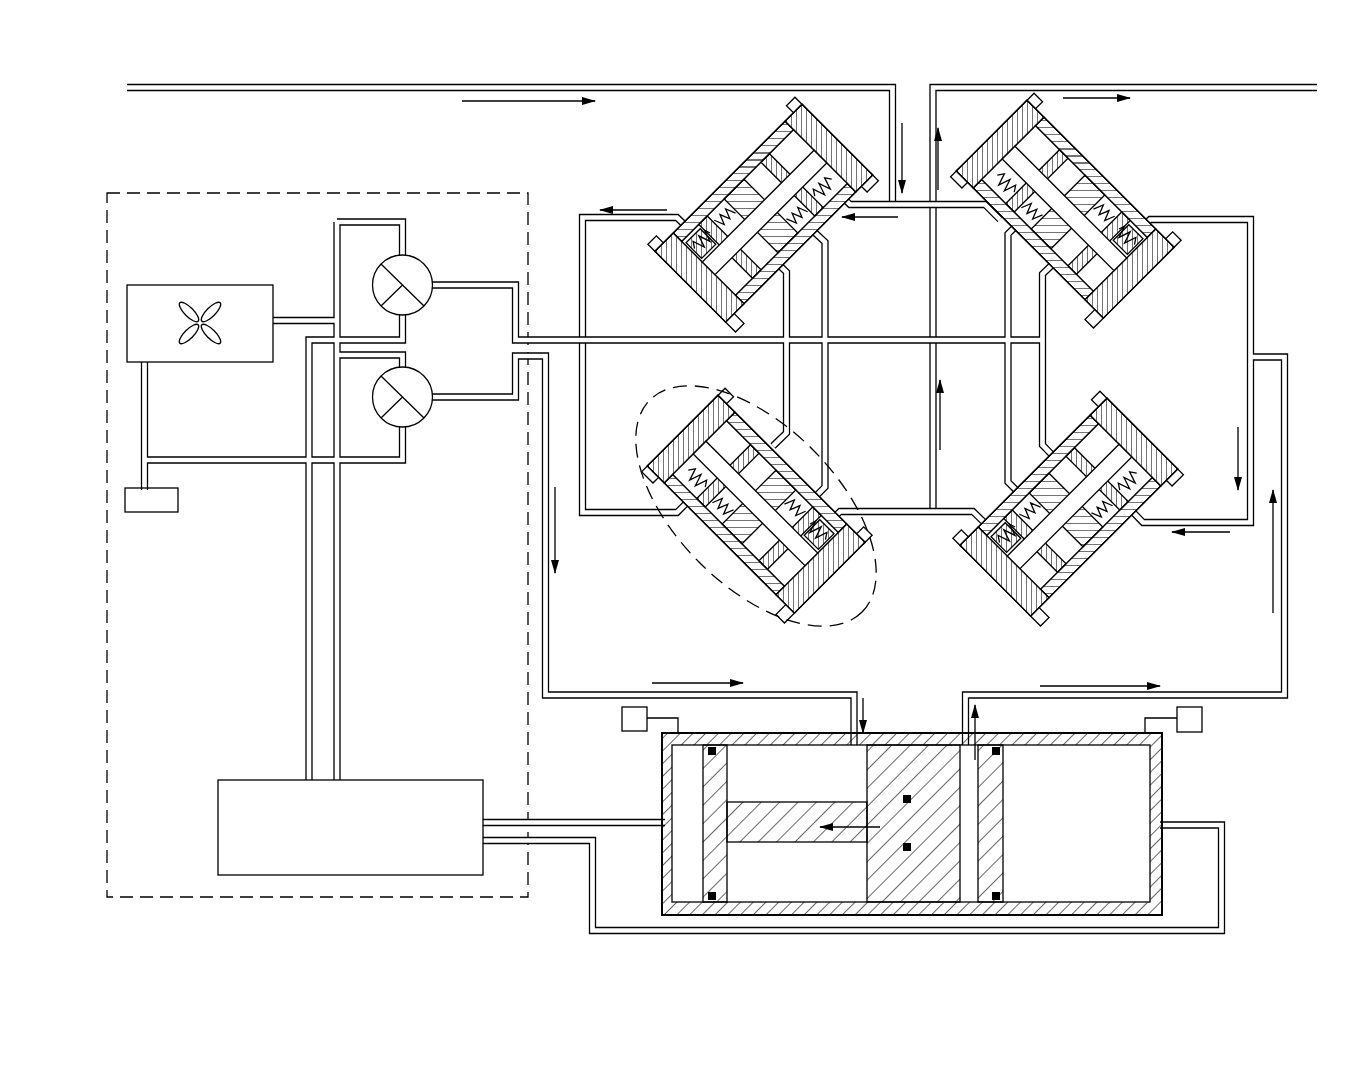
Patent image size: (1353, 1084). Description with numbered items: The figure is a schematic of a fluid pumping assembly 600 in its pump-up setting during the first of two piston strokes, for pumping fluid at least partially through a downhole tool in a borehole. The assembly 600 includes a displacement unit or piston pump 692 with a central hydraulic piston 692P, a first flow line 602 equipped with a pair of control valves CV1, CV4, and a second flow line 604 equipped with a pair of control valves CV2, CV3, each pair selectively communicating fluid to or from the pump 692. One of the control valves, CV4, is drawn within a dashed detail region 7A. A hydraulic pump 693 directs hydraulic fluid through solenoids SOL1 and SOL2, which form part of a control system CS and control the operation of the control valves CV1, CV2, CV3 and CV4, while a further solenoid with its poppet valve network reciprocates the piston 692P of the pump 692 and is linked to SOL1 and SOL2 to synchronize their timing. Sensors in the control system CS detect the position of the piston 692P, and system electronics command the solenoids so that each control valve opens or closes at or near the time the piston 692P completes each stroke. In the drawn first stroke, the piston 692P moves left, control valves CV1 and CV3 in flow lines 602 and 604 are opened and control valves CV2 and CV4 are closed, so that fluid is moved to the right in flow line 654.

The assembly 600 is at (200, 160).
The flow line 654 is at (386, 90).
The first flow line 602 is at (642, 214).
The second flow line 604 is at (1270, 356).
The hydraulic pump 693 is at (238, 363).
The pump 692 is at (956, 810).
The piston 692P is at (1003, 791).
The detail region of check valve CV4 7A is at (755, 505).
The control system CS is at (107, 628).
The control valve CV1 is at (765, 214).
The control valve CV2 is at (1063, 210).
The control valve CV3 is at (1070, 508).
The control valve CV4 is at (630, 608).
The solenoid SOL1 is at (427, 277).
The solenoid SOL2 is at (427, 407).